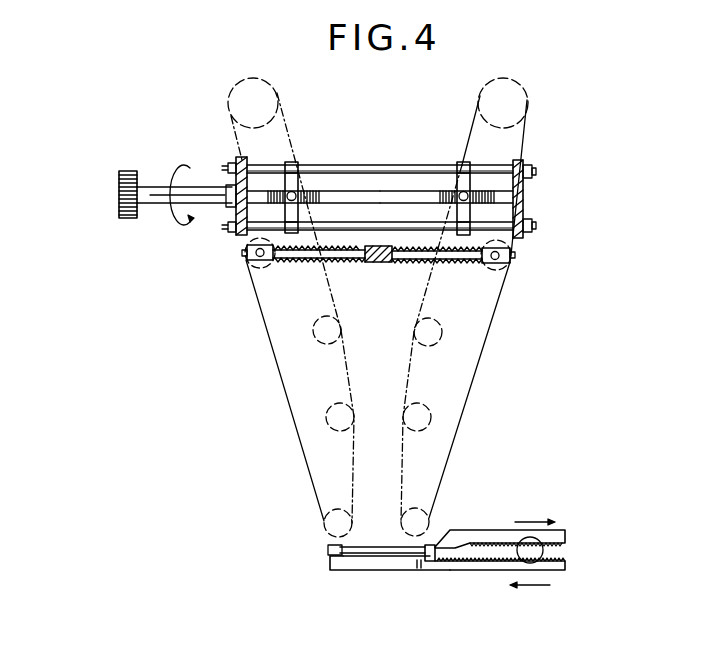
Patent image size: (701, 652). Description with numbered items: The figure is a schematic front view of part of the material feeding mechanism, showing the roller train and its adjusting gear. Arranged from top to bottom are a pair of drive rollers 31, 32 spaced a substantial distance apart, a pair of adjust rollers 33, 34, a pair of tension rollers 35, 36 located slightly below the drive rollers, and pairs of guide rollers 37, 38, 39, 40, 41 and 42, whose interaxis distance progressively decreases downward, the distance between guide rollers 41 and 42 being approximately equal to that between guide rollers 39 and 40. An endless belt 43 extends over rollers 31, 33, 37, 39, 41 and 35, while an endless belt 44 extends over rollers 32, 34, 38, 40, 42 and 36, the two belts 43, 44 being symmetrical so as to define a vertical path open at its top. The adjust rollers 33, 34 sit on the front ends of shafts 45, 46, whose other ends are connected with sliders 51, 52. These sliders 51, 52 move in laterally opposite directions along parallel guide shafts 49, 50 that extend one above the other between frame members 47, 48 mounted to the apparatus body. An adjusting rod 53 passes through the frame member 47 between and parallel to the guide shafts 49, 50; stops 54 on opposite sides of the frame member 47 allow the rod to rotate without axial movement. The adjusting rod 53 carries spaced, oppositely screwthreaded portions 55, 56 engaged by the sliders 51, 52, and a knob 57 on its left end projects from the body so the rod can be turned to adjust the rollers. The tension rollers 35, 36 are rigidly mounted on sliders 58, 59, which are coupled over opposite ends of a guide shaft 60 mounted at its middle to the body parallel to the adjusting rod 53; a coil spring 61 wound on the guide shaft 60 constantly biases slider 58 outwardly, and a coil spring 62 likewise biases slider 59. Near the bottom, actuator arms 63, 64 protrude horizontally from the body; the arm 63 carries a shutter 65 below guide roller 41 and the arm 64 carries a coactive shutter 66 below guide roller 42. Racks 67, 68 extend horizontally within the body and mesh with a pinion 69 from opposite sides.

The drive roller 31 is at (262, 84).
The drive roller 32 is at (524, 95).
The adjust roller 33 is at (245, 237).
The adjust roller 34 is at (488, 192).
The tension roller 35 is at (273, 268).
The tension roller 36 is at (487, 270).
The guide roller 37 is at (316, 341).
The guide roller 38 is at (434, 345).
The guide roller 39 is at (349, 407).
The guide roller 40 is at (428, 429).
The guide roller 41 is at (323, 521).
The guide roller 42 is at (430, 512).
The endless belt 43 is at (283, 396).
The endless belt 44 is at (487, 378).
The shaft 45 is at (298, 192).
The shaft 46 is at (462, 192).
The frame member 47 is at (237, 162).
The frame member 48 is at (524, 198).
The guide shaft 49 is at (523, 166).
The guide shaft 50 is at (535, 226).
The slider 51 is at (297, 160).
The slider 52 is at (463, 160).
The adjusting rod 53 is at (212, 205).
The stops 54 is at (228, 190).
The screwthreaded portion 55 is at (336, 185).
The screwthreaded portion 56 is at (450, 197).
The knob 57 is at (122, 190).
The slider 58 is at (252, 265).
The slider 59 is at (503, 265).
The guide shaft 60 is at (372, 262).
The coil spring 61 is at (300, 262).
The coil spring 62 is at (426, 262).
The actuator arm 63 is at (330, 560).
The actuator arm 64 is at (436, 566).
The shutter 65 is at (366, 546).
The shutter 66 is at (398, 572).
The rack 67 is at (490, 576).
The rack 68 is at (484, 529).
The pinion 69 is at (546, 550).